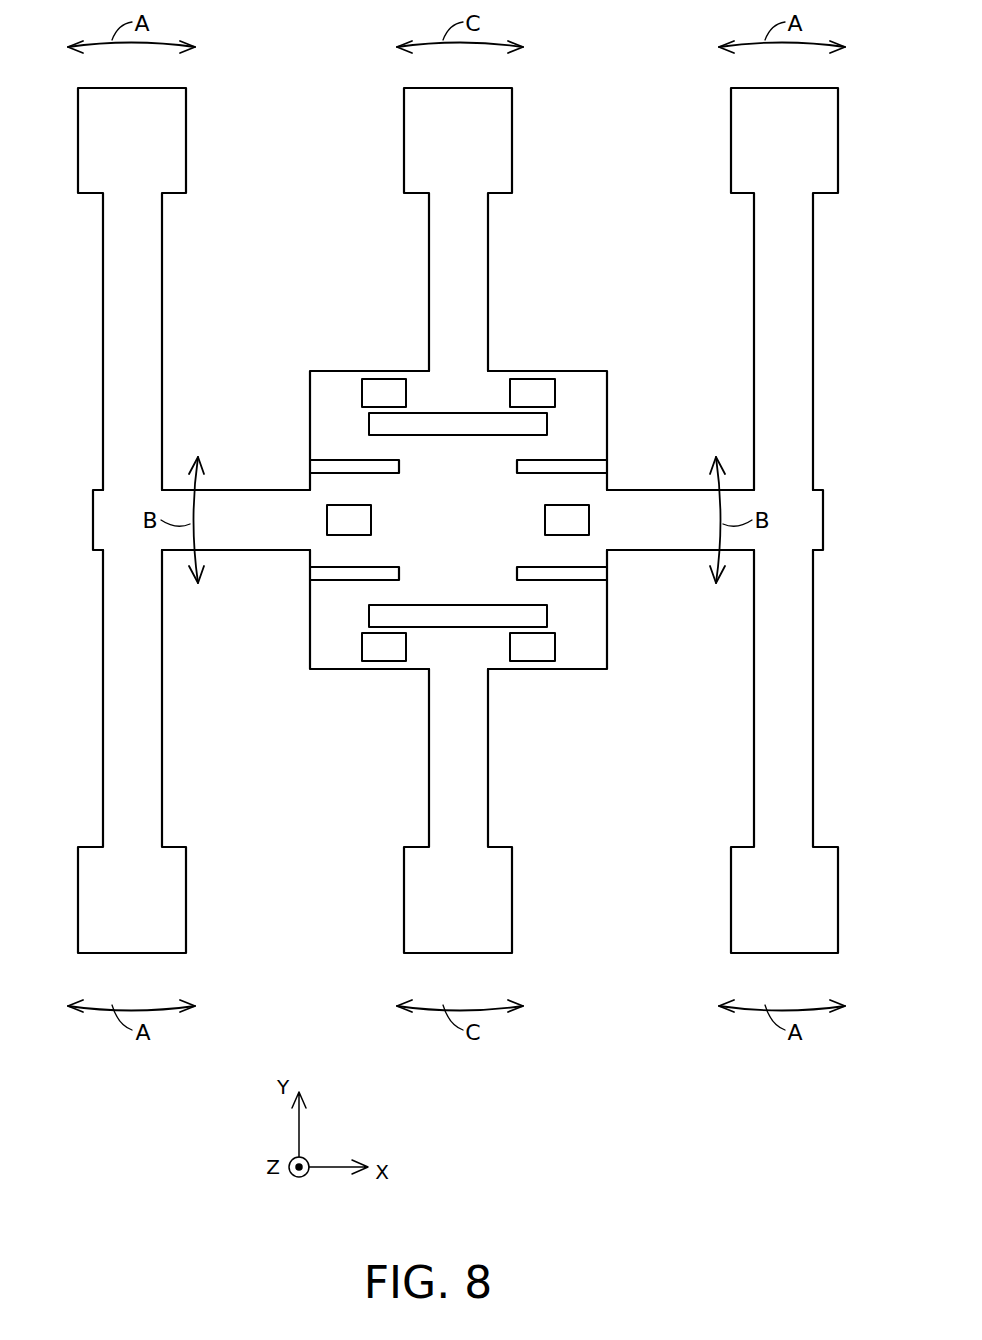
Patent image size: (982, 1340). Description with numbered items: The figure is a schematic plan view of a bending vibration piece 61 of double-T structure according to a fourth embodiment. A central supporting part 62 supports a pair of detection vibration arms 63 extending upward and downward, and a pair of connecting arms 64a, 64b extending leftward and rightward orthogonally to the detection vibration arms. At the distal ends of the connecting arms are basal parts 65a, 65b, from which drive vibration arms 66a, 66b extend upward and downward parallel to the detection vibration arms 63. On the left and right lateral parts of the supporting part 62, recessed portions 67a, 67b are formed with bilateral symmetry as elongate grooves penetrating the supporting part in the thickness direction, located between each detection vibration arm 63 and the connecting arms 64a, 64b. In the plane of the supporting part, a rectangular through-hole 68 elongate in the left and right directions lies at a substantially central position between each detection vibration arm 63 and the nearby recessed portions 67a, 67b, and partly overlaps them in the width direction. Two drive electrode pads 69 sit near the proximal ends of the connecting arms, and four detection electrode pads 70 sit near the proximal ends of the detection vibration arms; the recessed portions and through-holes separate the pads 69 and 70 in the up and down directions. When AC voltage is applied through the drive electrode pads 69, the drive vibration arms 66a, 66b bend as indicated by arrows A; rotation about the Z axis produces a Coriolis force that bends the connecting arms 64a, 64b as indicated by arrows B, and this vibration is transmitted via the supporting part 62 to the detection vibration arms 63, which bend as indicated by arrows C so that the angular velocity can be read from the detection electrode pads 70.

The bending vibration piece 61 is at (593, 154).
The central supporting part 62 is at (607, 384).
The detection vibration arms 63 is at (488, 250).
The connecting arm 64a is at (273, 490).
The connecting arm 64b is at (650, 490).
The basal part 65a is at (93, 520).
The basal part 65b is at (823, 520).
The drive vibration arm 66a is at (162, 250).
The drive vibration arm 66b is at (754, 240).
The recessed portion 67a is at (319, 462).
The recessed portion 67b is at (600, 463).
The through-hole 68 is at (445, 415).
The drive electrode pads 69 is at (327, 522).
The detection electrode pads 70 is at (373, 379).